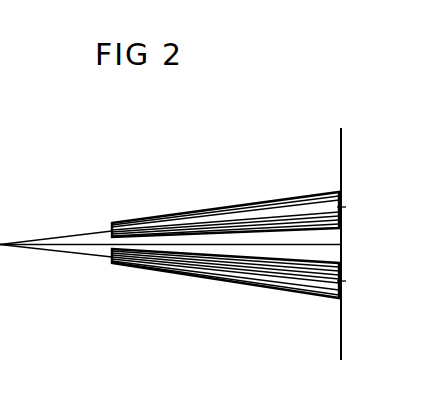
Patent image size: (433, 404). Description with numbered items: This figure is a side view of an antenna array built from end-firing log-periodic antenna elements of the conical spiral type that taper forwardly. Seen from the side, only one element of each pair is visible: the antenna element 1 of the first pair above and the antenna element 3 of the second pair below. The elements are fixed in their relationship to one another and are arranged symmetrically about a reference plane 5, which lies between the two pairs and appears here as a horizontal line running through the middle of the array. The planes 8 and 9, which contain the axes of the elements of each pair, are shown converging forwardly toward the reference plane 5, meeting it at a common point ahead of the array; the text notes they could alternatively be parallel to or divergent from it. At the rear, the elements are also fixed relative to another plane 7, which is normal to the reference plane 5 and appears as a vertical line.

The antenna element 1 is at (222, 216).
The antenna element 3 is at (220, 272).
The reference plane 5 is at (55, 246).
The plane 7 is at (341, 155).
The plane containing axes of a pair of elements 8 is at (70, 236).
The plane containing axes of a pair of elements 9 is at (73, 256).